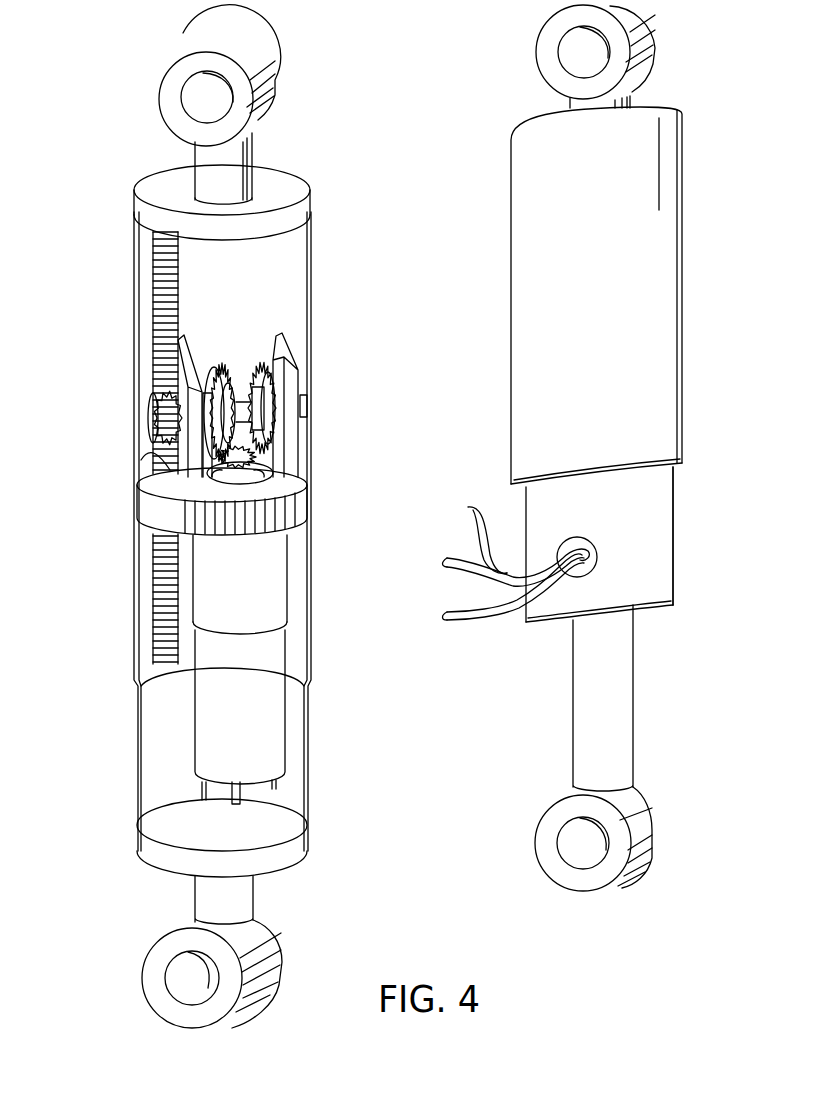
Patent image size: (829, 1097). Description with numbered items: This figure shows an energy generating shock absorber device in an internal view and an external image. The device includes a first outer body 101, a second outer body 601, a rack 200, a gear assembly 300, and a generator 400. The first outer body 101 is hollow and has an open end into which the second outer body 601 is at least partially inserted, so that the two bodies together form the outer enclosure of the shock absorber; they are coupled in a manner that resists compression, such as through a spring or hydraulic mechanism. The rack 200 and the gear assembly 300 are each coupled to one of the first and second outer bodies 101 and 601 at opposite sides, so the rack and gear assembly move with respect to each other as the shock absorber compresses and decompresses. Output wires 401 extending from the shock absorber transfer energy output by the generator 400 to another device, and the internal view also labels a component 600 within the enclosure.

The first outer body 101 is at (135, 243).
The rack 200 is at (152, 300).
The gear assembly 300 is at (152, 444).
The generator 400 is at (140, 708).
The motor 600 is at (210, 733).
The output wires 401 is at (477, 617).
The second outer body 601 is at (662, 527).